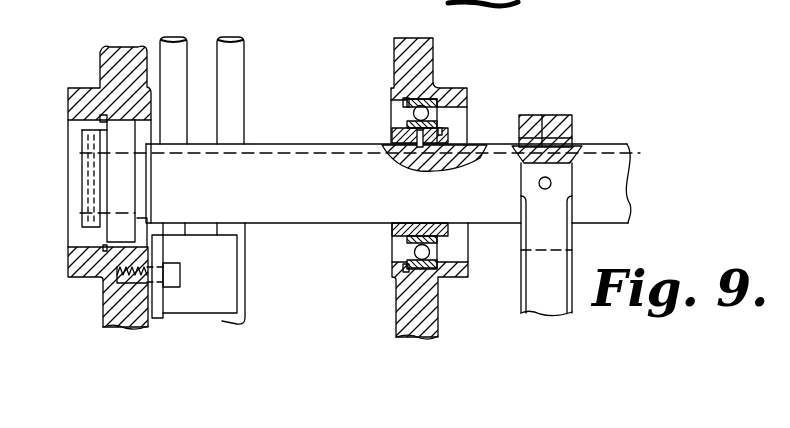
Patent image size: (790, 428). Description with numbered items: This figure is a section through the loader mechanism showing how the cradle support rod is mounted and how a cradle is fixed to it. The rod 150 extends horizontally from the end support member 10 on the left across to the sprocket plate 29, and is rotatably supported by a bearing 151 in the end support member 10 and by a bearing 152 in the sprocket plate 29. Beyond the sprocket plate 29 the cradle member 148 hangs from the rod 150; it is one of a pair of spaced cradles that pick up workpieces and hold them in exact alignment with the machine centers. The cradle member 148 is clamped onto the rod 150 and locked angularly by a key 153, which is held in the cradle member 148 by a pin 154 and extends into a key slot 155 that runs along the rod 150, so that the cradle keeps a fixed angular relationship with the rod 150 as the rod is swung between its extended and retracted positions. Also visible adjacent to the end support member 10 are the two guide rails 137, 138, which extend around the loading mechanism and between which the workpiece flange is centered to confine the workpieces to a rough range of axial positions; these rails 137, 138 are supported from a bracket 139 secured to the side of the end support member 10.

The end support member 10 is at (106, 58).
The sprocket plate 29 is at (394, 52).
The guide rail 137 is at (164, 37).
The guide rail 138 is at (226, 37).
The bracket 139 is at (208, 314).
The cradle member 148 is at (522, 309).
The rod 150 is at (635, 162).
The bearing 151 is at (100, 134).
The bearing 152 is at (408, 123).
The key 153 is at (573, 148).
The pin 154 is at (545, 115).
The key slot 155 is at (331, 150).